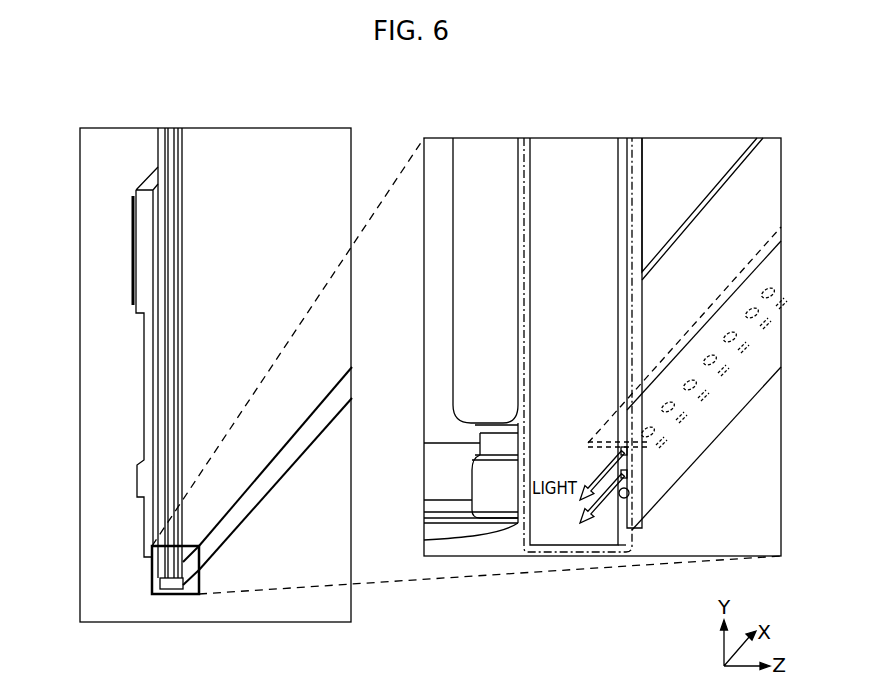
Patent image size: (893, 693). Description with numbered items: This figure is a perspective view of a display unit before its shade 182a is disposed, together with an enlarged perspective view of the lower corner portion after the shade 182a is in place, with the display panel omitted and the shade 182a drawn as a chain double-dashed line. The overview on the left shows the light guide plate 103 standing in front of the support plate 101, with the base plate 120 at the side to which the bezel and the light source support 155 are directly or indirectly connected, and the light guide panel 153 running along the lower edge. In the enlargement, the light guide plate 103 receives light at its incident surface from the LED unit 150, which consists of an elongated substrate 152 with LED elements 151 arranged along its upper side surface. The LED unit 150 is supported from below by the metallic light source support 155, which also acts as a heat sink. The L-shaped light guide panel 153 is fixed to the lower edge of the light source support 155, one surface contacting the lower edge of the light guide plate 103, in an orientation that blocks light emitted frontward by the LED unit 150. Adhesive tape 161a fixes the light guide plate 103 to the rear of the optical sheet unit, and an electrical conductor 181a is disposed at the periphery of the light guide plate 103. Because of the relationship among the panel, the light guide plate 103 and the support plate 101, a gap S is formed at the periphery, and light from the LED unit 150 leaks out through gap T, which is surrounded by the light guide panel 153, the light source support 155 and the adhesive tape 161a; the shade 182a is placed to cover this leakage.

The support plate 101 is at (483, 168).
The light guide plate 103 is at (253, 190).
The base plate 120 is at (144, 487).
The LED unit 150 is at (758, 367).
The LED elements 151 is at (737, 333).
The substrate 152 is at (732, 352).
The light guide panel 153 is at (222, 533).
The light source support 155 is at (447, 427).
The adhesive tape 161a is at (637, 168).
The electrical conductor 181a is at (173, 250).
The shade 182a is at (617, 555).
The gap S is at (531, 168).
The gap T is at (629, 494).